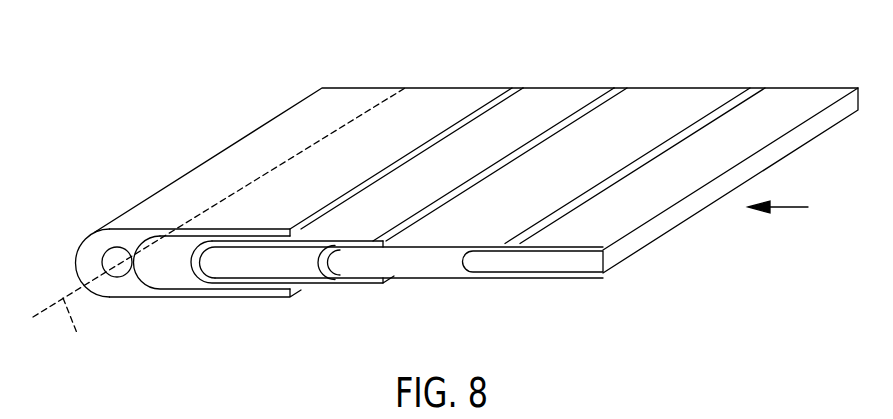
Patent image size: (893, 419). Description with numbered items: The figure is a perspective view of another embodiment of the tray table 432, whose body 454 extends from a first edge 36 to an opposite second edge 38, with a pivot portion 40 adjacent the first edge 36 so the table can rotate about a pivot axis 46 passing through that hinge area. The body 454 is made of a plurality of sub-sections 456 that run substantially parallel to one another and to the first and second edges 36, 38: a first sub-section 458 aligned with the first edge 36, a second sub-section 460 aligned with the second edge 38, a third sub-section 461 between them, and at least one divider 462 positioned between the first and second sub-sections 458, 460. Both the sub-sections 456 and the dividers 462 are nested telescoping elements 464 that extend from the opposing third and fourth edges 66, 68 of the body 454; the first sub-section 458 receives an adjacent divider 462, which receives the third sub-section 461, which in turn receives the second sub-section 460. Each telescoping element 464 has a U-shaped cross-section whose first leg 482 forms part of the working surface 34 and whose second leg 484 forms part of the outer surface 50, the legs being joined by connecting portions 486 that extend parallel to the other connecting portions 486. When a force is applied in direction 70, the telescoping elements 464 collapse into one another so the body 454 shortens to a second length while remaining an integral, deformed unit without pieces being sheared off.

The tray table 432 is at (224, 97).
The working surface 34 is at (555, 97).
The body 454 is at (458, 97).
The fourth edge 68 is at (600, 88).
The nested telescoping elements 464 is at (685, 90).
The second edge 38 is at (650, 232).
The direction of force 70 is at (783, 208).
The second sub-section 460 is at (552, 263).
The third sub-section 461 is at (408, 248).
The first edge 36 is at (77, 267).
The first sub-section 458 is at (95, 248).
The pivot portion 40 is at (115, 287).
The pivot axis 46 is at (73, 330).
The sub-sections 456 is at (157, 287).
The first leg 482 is at (233, 232).
The connecting portions 486 is at (97, 248).
The third edge 66 is at (248, 285).
The second leg 484 is at (275, 293).
The divider 462 is at (317, 285).
The outer surface 50 is at (377, 283).